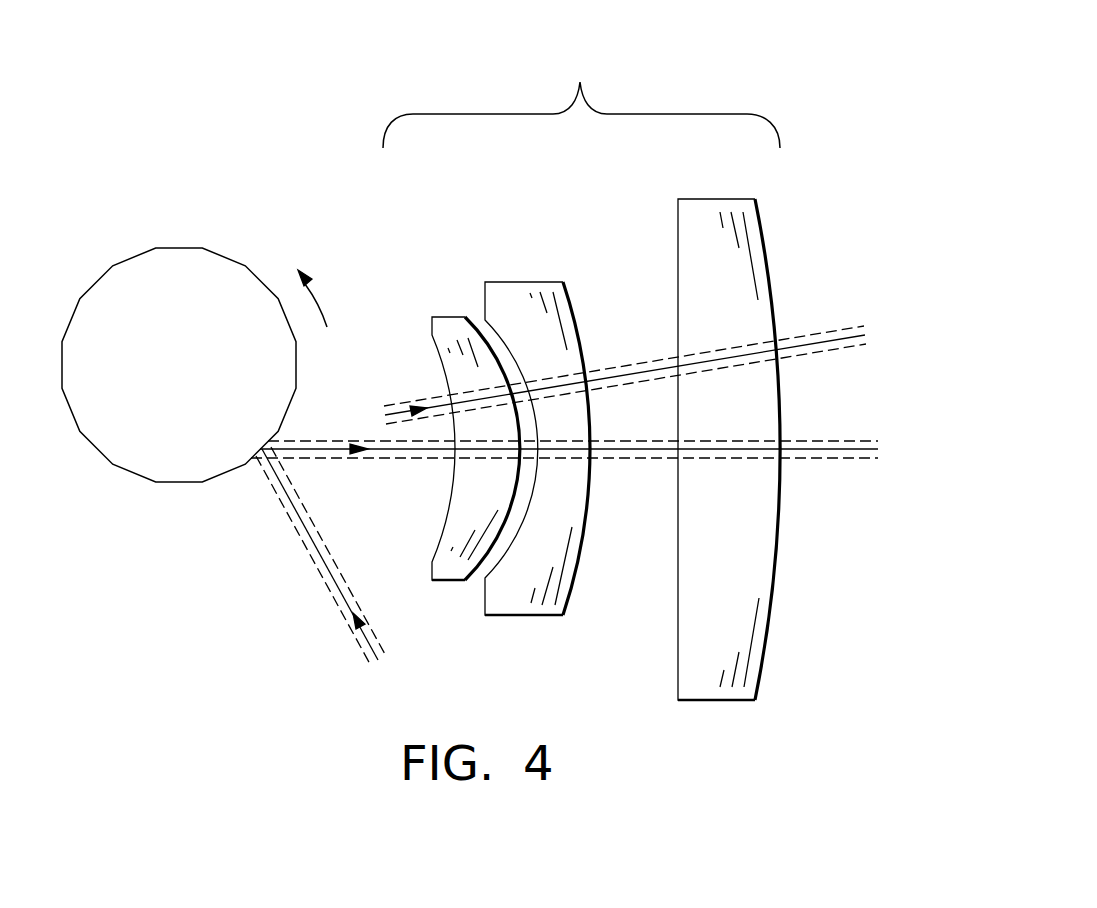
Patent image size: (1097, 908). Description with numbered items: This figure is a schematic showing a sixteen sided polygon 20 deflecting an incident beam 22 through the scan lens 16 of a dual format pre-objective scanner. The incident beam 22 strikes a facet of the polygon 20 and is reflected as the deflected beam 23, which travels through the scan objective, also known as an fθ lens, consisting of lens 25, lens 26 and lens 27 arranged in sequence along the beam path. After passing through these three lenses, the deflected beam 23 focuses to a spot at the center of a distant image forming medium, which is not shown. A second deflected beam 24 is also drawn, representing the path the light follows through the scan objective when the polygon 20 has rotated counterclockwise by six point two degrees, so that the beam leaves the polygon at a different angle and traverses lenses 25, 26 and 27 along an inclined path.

The scan lens 16 is at (581, 98).
The sixteen sided polygon 20 is at (178, 483).
The incident beam 22 is at (340, 562).
The deflected beam 23 is at (373, 438).
The deflected beam 24 is at (430, 395).
The lens 25 is at (452, 317).
The lens 26 is at (523, 280).
The lens 27 is at (717, 198).